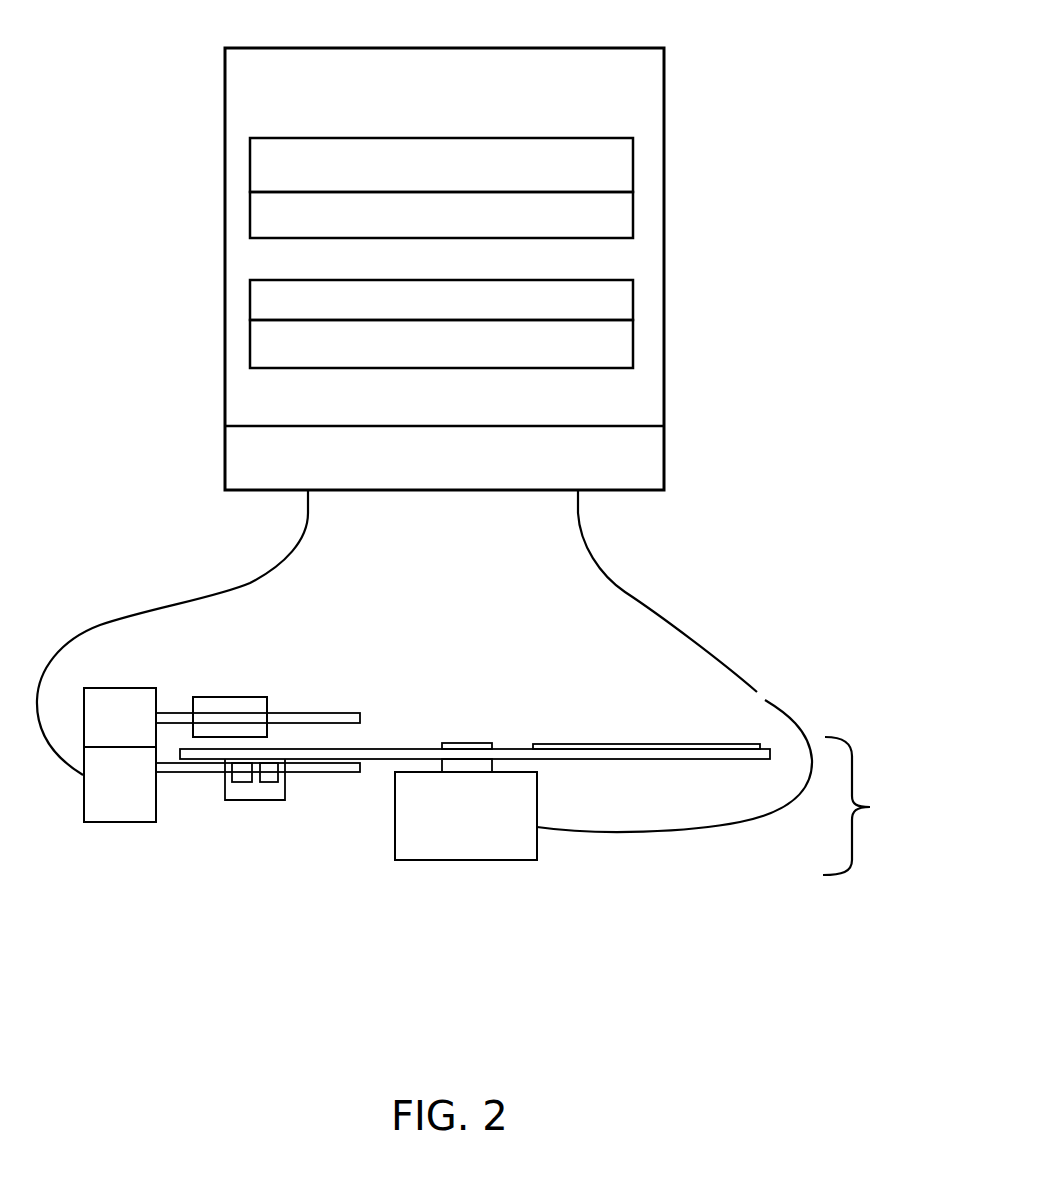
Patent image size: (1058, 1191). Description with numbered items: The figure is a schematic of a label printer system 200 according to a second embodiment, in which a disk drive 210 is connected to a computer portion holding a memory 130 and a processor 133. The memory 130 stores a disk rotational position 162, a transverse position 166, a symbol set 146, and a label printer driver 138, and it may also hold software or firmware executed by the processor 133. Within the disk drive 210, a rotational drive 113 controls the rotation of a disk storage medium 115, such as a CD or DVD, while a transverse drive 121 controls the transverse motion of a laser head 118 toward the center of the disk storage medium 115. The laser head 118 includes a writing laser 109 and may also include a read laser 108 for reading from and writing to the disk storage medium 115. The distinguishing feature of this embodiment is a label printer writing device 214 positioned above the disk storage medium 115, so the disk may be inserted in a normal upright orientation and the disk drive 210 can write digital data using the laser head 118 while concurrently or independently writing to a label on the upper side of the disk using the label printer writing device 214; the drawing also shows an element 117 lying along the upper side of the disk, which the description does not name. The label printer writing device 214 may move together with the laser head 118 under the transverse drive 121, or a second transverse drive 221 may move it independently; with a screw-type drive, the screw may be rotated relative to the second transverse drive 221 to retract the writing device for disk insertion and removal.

The memory 130 is at (667, 83).
The disk rotational position 162 is at (250, 160).
The transverse position 166 is at (250, 210).
The symbol set 146 is at (250, 303).
The label printer driver 138 is at (250, 343).
The processor 133 is at (225, 455).
The second transverse drive 221 is at (130, 688).
The transverse drive 121 is at (123, 822).
The label printer writing device 214 is at (250, 697).
The laser head 118 is at (250, 800).
The read laser 108 is at (237, 800).
The writing laser 109 is at (270, 800).
The disk storage medium 115 is at (508, 745).
The label 117 is at (637, 745).
The rotational drive 113 is at (450, 860).
The disk drive 210 is at (875, 806).
The label printer system 200 is at (186, 949).